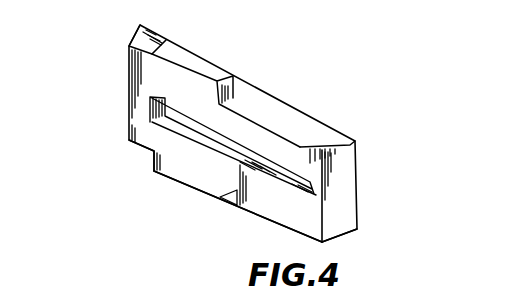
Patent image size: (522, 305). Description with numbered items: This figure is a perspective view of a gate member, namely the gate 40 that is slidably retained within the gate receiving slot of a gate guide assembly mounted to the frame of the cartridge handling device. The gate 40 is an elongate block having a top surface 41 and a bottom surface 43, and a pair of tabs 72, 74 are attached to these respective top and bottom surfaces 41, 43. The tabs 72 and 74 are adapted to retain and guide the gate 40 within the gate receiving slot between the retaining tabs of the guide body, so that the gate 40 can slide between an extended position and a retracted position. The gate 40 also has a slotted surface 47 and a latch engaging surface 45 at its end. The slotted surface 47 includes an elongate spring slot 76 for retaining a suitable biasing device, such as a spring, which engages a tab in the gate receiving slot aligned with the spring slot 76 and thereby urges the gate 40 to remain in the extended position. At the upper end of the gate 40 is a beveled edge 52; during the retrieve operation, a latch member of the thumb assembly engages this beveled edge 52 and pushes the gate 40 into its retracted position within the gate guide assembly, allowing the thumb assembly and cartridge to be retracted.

The gate 40 is at (318, 113).
The top surface 41 is at (327, 138).
The bottom surface 43 is at (352, 231).
The latch engaging surface 45 is at (359, 183).
The slotted surface 47 is at (290, 216).
The beveled edge 52 is at (137, 34).
The tab 72 is at (247, 91).
The tab 74 is at (189, 190).
The spring slot 76 is at (150, 110).